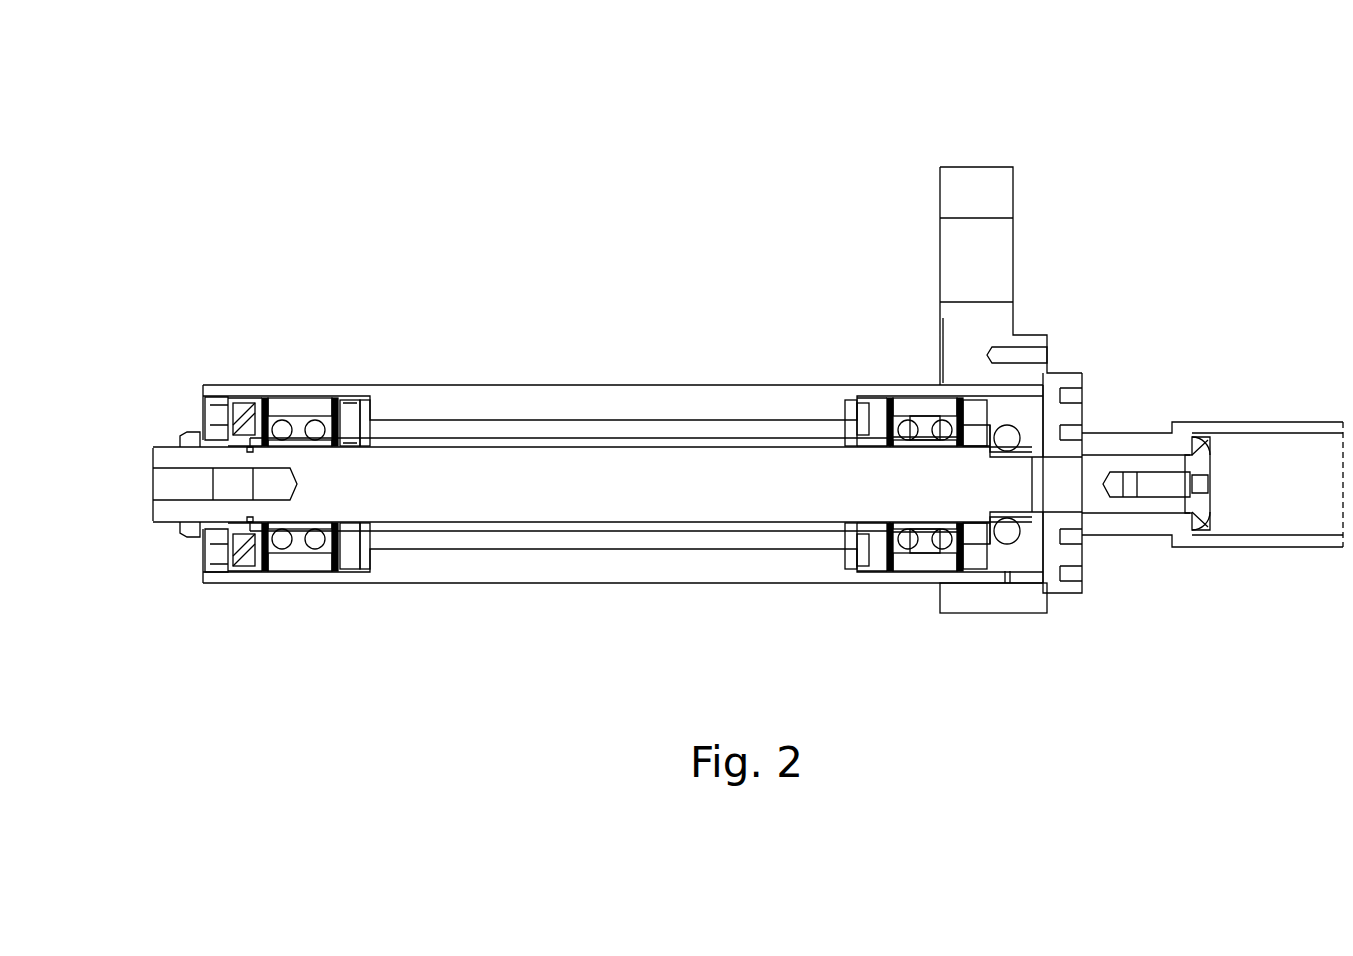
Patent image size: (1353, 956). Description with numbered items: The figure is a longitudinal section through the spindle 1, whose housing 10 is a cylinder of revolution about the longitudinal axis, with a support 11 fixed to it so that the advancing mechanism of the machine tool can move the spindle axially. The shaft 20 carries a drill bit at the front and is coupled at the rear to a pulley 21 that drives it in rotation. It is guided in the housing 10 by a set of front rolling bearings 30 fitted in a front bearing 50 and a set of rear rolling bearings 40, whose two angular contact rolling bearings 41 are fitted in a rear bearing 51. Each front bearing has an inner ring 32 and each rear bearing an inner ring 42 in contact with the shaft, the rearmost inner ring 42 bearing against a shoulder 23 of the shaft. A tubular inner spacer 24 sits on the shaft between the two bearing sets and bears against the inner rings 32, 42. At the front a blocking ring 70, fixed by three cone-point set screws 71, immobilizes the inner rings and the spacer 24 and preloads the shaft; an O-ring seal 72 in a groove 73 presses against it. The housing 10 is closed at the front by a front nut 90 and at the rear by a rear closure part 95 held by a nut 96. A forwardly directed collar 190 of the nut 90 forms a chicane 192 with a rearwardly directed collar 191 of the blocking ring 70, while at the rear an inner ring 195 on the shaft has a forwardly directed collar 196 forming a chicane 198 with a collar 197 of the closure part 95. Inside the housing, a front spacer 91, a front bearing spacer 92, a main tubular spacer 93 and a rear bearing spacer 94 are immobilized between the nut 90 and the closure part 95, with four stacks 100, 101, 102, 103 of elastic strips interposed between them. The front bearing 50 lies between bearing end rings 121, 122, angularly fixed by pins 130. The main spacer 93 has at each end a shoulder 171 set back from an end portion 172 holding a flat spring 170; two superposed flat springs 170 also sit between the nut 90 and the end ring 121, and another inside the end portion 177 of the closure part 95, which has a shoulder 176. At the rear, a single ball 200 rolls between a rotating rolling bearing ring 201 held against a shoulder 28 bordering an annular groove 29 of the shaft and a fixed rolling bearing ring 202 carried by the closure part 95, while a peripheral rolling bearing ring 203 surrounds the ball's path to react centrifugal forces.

The spindle 1 is at (617, 336).
The housing 10 is at (512, 384).
The support 11 is at (958, 166).
The shaft 20 is at (1150, 536).
The pulley 21 is at (1205, 550).
The shoulder 23 is at (962, 450).
The tubular inner spacer 24 is at (555, 525).
The shoulder 28 is at (1005, 452).
The annular groove 29 is at (985, 520).
The set of front rolling bearings 30 is at (298, 392).
The inner ring 32 is at (290, 575).
The set of rear rolling bearings 40 is at (908, 575).
The angular contact rolling bearing 41 is at (898, 400).
The inner ring 42 is at (860, 570).
The front bearing 50 is at (300, 420).
The rear bearing 51 is at (895, 400).
The blocking ring 70 is at (185, 528).
The cone-point set screw 71 is at (180, 438).
The O-ring seal 72 is at (215, 466).
The groove 73 is at (263, 517).
The front nut 90 is at (233, 590).
The front spacer 91 is at (245, 585).
The front bearing spacer 92 is at (300, 575).
The main tubular spacer 93 is at (620, 570).
The rear bearing spacer 94 is at (935, 585).
The rear closure part 95 is at (1030, 590).
The nut 96 is at (1045, 598).
The stack of elastic strips 100 is at (262, 580).
The stack of elastic strips 101 is at (345, 590).
The stack of elastic strips 102 is at (870, 585).
The stack of elastic strips 103 is at (912, 396).
The bearing end ring 121 is at (250, 400).
The bearing end ring 122 is at (358, 400).
The pin 130 is at (265, 585).
The flat spring 170 is at (235, 398).
The shoulder 171 is at (380, 400).
The end portion 172 is at (340, 400).
The shoulder 176 is at (1000, 585).
The end portion 177 is at (975, 585).
The forwardly directed collar 190 is at (210, 548).
The rearwardly directed collar 191 is at (205, 575).
The chicane 192 is at (205, 398).
The inner ring 195 is at (1103, 484).
The forwardly directed collar 196 is at (1070, 418).
The collar 197 is at (1065, 440).
The chicane 198 is at (1070, 532).
The single ball 200 is at (1050, 410).
The rotating rolling bearing ring 201 is at (1075, 585).
The fixed rolling bearing ring 202 is at (1062, 566).
The peripheral rolling bearing ring 203 is at (1048, 393).